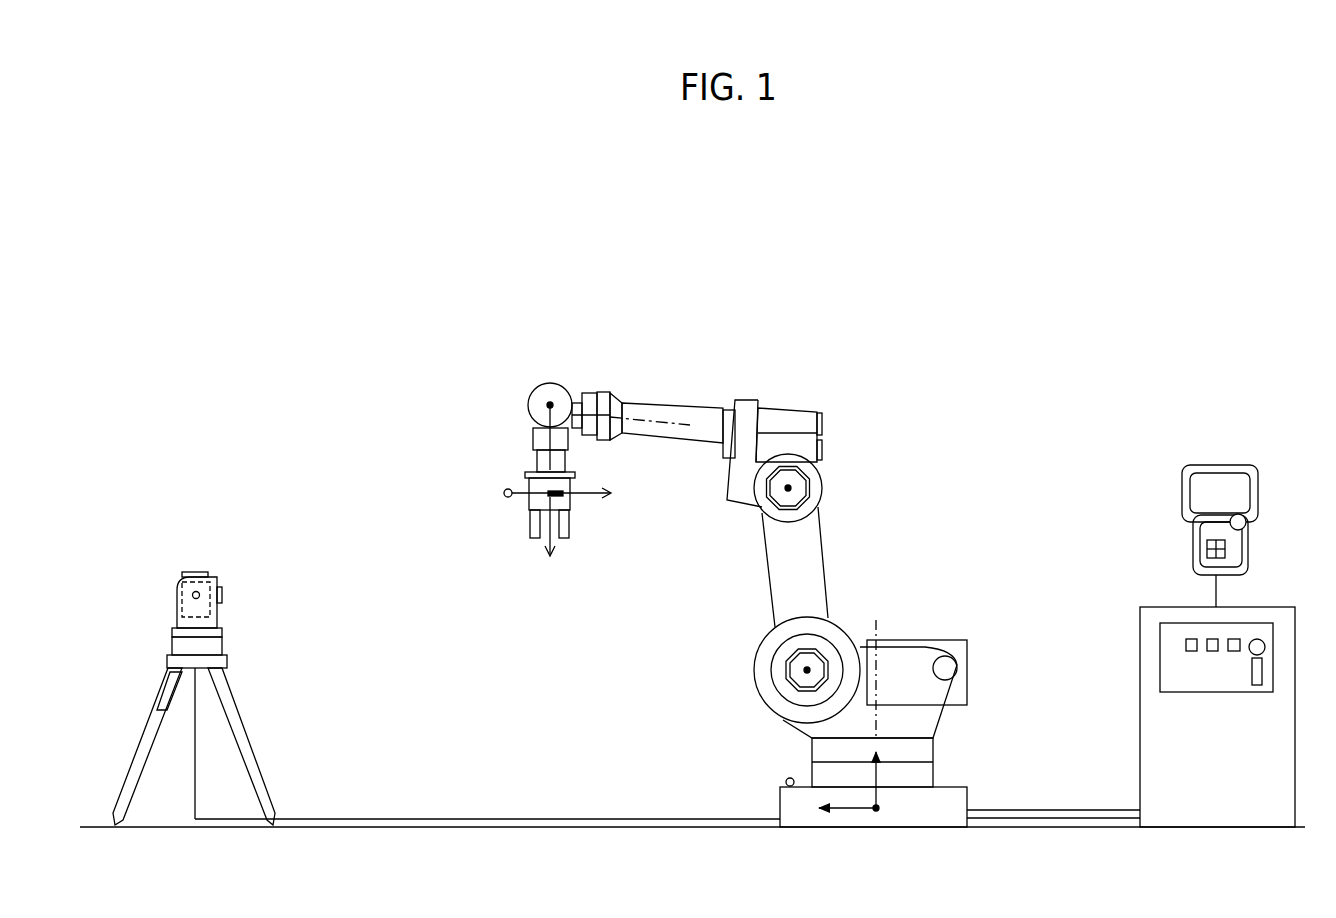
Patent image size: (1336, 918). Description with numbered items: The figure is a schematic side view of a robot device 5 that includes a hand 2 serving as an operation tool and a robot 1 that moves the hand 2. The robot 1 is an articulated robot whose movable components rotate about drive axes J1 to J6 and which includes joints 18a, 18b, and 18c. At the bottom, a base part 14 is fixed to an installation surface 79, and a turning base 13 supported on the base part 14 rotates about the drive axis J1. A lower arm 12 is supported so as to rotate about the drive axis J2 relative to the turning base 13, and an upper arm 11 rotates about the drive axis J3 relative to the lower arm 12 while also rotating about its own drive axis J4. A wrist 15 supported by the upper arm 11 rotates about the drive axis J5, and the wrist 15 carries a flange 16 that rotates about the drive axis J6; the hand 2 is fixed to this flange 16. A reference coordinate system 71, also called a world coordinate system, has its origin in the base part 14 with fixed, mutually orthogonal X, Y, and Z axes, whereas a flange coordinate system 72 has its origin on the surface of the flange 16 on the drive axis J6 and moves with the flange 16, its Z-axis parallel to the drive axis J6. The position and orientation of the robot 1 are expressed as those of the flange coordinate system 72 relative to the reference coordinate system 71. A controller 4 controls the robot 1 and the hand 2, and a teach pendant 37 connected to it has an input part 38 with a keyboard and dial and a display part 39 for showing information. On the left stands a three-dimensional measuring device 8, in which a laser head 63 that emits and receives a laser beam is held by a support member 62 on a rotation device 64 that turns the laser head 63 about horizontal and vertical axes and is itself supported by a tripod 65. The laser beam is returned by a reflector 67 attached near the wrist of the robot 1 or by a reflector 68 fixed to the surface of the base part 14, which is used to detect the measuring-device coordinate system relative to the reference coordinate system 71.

The robot 1 is at (749, 394).
The hand 2 is at (572, 526).
The controller 4 is at (1295, 653).
The robot device 5 is at (1058, 378).
The three-dimensional measuring device 8 is at (145, 550).
The upper arm 11 is at (700, 410).
The lower arm 12 is at (810, 536).
The turning base 13 is at (927, 700).
The base part 14 is at (960, 805).
The wrist 15 is at (538, 433).
The flange 16 is at (567, 485).
The joint 18a is at (807, 647).
The joint 18b is at (804, 505).
The joint 18c is at (512, 369).
The teach pendant 37 is at (1221, 516).
The input part 38 is at (1222, 547).
The display part 39 is at (1237, 490).
The support member 62 is at (178, 618).
The laser head 63 is at (203, 573).
The rotation device 64 is at (172, 642).
The tripod 65 is at (150, 728).
The reflector 67 is at (504, 493).
The reflector 68 is at (786, 781).
The reference coordinate system 71 is at (847, 812).
The flange coordinate system 72 is at (542, 512).
The installation surface 79 is at (560, 825).
The drive axis J1 is at (880, 663).
The drive axis J2 is at (805, 670).
The drive axis J3 is at (786, 490).
The drive axis J4 is at (641, 417).
The drive axis J5 is at (552, 402).
The drive axis J6 is at (547, 454).